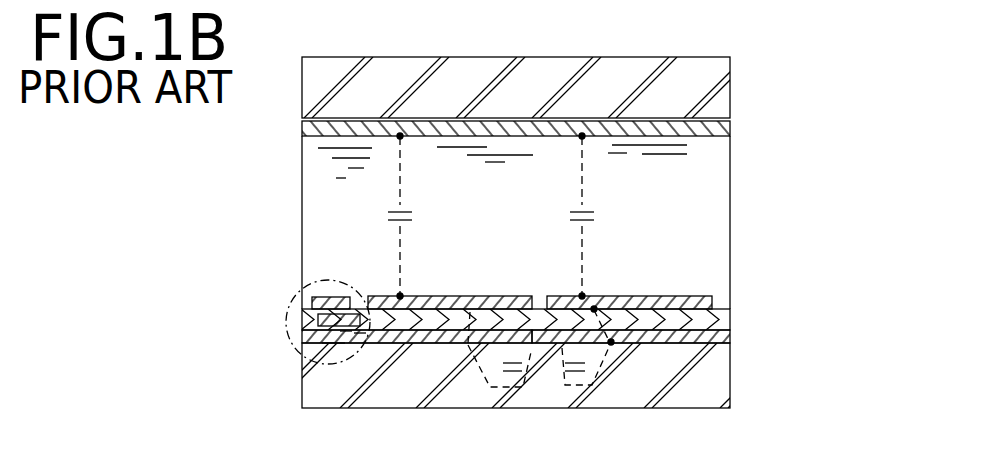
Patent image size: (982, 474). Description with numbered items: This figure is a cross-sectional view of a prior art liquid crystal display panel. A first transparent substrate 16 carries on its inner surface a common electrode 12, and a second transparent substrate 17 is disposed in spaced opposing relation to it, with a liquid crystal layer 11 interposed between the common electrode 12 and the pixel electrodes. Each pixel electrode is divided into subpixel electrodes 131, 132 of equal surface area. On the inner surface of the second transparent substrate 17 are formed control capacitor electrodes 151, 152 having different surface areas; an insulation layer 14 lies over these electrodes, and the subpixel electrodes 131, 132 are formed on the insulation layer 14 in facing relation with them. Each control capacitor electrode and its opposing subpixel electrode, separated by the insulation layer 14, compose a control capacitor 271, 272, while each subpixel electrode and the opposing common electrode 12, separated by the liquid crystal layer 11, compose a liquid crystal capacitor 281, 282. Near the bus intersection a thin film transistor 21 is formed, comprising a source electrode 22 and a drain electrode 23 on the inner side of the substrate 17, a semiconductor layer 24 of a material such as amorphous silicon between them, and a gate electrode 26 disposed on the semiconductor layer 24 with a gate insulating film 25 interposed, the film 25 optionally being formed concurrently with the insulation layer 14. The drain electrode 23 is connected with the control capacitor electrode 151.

The transparent substrate 16 is at (375, 75).
The common electrode 12 is at (712, 128).
The liquid crystal layer 11 is at (720, 165).
The liquid crystal capacitor 281 is at (418, 216).
The liquid crystal capacitor 282 is at (596, 216).
The gate electrode 26 is at (341, 290).
The thin film transistor 21 is at (320, 283).
The subpixel electrode 131 is at (447, 296).
The subpixel electrode 132 is at (600, 296).
The insulation layer 14 is at (720, 322).
The gate insulating film 25 is at (312, 323).
The control capacitor electrode 151 is at (433, 343).
The control capacitor electrode 152 is at (688, 346).
The transparent substrate 17 is at (707, 395).
The source electrode 22 is at (322, 348).
The semiconductor layer 24 is at (345, 333).
The drain electrode 23 is at (360, 335).
The control capacitor 271 is at (525, 372).
The control capacitor 272 is at (596, 376).